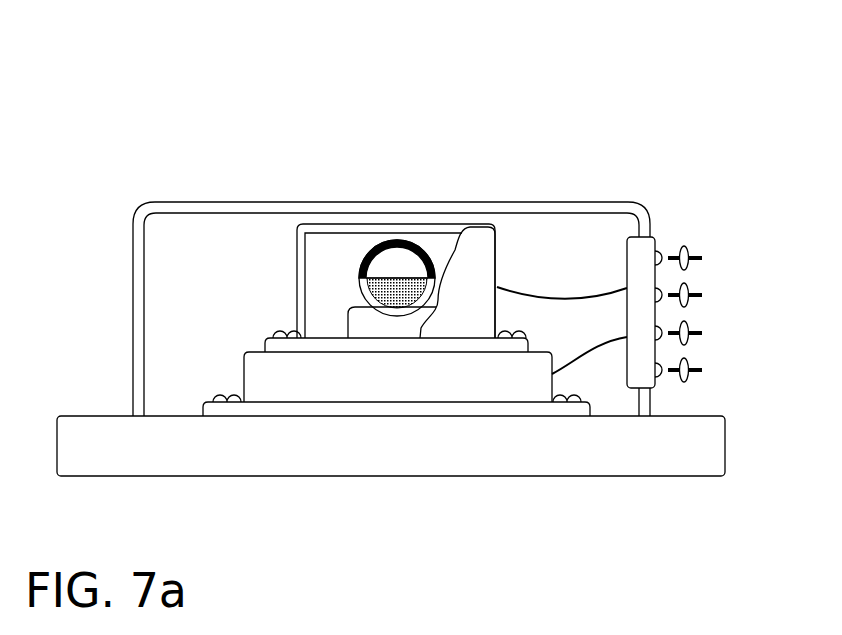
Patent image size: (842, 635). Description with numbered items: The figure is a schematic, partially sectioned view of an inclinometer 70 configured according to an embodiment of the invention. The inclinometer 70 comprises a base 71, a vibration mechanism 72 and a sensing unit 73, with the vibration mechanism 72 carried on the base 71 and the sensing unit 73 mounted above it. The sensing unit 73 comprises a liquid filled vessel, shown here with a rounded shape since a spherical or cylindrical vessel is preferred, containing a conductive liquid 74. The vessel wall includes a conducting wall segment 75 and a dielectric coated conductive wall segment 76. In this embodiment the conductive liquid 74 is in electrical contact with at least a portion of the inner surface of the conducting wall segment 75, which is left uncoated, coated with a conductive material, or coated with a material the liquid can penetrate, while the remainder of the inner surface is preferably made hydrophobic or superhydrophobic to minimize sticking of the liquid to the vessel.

The inclinometer 70 is at (695, 75).
The base 71 is at (592, 457).
The vibration mechanism 72 is at (398, 387).
The sensing unit 73 is at (477, 260).
The conductive liquid 74 is at (390, 285).
The conducting wall segment 75 is at (362, 298).
The dielectric coated conductive wall segment 76 is at (368, 259).